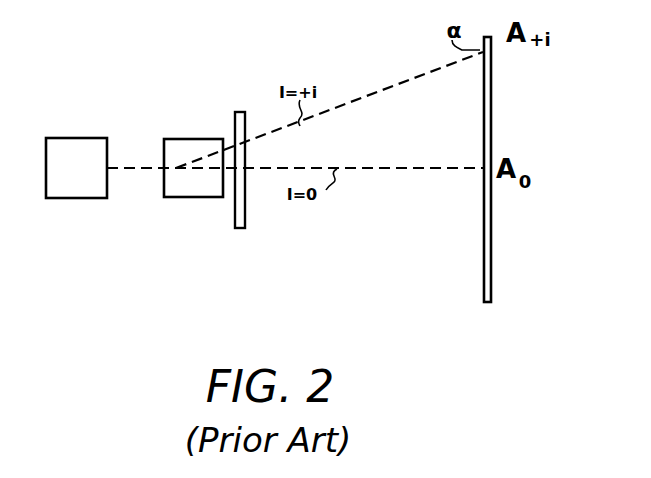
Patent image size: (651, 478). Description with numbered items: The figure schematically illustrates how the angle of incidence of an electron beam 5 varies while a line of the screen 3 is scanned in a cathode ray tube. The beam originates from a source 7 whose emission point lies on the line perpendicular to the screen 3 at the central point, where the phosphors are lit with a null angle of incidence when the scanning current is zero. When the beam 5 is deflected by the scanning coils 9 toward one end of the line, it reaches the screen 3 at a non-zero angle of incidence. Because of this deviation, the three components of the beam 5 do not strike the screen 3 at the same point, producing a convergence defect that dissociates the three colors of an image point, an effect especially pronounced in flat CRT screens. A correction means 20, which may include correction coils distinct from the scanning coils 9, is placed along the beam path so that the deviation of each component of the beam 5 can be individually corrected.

The source 7 is at (75, 198).
The electron beam 5 is at (132, 170).
The scanning coils 9 is at (193, 197).
The correction means 20 is at (240, 228).
The screen 3 is at (493, 291).